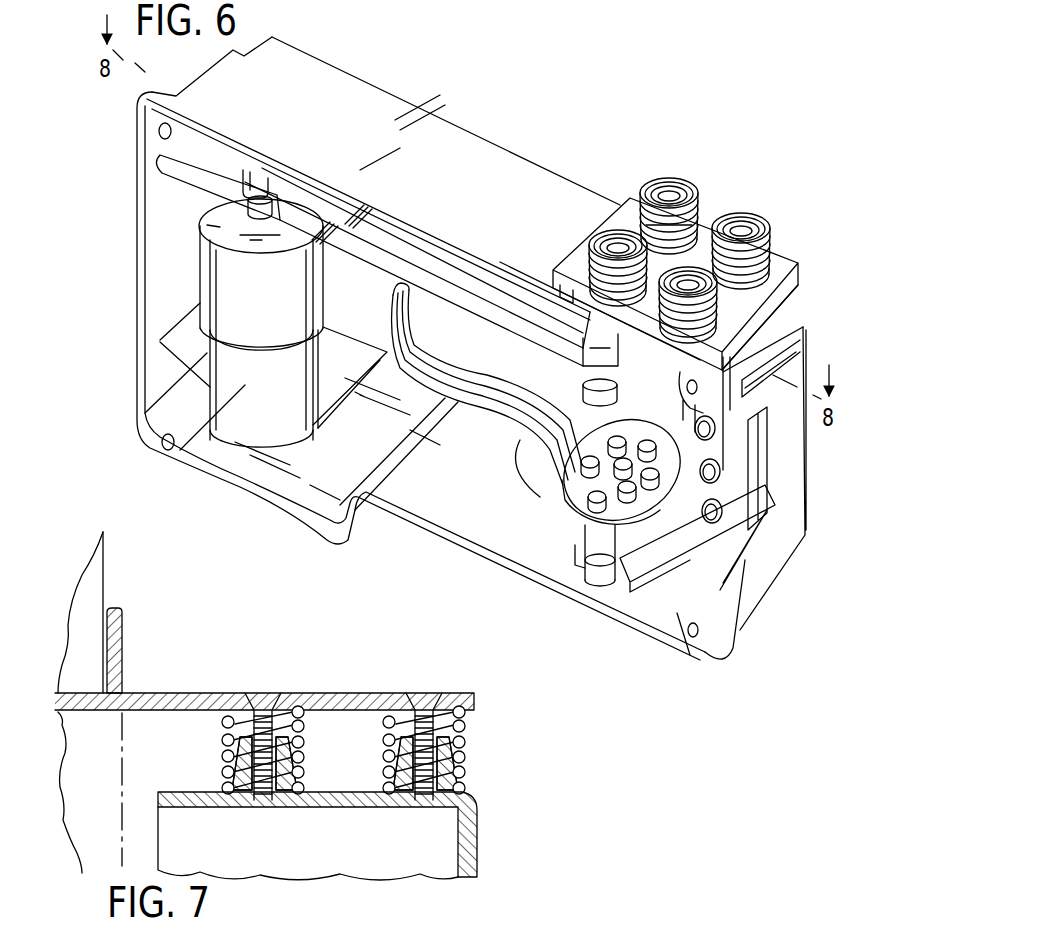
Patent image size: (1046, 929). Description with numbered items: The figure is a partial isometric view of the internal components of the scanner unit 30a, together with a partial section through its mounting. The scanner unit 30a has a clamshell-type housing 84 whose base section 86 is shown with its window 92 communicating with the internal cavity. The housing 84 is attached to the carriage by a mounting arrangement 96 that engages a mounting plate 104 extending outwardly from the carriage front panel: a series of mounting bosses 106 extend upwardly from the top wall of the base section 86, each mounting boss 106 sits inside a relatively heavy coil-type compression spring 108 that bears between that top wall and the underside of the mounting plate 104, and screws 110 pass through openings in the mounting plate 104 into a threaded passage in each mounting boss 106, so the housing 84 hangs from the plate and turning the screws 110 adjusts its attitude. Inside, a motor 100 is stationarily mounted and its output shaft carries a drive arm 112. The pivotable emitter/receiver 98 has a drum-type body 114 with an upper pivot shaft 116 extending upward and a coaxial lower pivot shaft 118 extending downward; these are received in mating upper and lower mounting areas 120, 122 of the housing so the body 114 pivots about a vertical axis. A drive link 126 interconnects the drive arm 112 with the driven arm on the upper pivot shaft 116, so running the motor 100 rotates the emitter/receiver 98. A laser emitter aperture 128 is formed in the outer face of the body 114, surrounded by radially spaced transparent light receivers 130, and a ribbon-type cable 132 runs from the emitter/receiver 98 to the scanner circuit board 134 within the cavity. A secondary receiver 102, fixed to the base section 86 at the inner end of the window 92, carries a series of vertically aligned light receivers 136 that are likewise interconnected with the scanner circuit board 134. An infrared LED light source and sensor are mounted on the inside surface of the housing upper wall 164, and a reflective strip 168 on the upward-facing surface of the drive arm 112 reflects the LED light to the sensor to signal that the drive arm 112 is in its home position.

In FIG. 6, the housing 84 is at (513, 108).
In FIG. 6, the base section 86 is at (815, 443).
In FIG. 7, the base section 86 is at (317, 836).
In FIG. 6, the window 92 is at (750, 557).
In FIG. 6, the mounting arrangement 96 is at (792, 206).
In FIG. 6, the emitter/receiver 98 is at (545, 527).
In FIG. 6, the motor 100 is at (182, 272).
In FIG. 6, the secondary receiver 102 is at (724, 531).
In FIG. 7, the mounting plate 104 is at (467, 692).
In FIG. 6, the mounting boss 106 is at (667, 203).
In FIG. 7, the mounting boss 106 is at (345, 763).
In FIG. 6, the compression spring 108 is at (697, 193).
In FIG. 7, the compression spring 108 is at (220, 720).
In FIG. 7, the screw 110 is at (273, 713).
In FIG. 6, the drive arm 112 is at (200, 180).
In FIG. 6, the drum-type body 114 is at (566, 529).
In FIG. 6, the upper pivot shaft 116 is at (580, 382).
In FIG. 6, the lower pivot shaft 118 is at (597, 550).
In FIG. 6, the upper mounting area 120 is at (780, 327).
In FIG. 6, the lower mounting area 122 is at (647, 565).
In FIG. 6, the drive link 126 is at (405, 255).
In FIG. 6, the laser emitter aperture 128 is at (543, 427).
In FIG. 6, the light receivers 130 is at (597, 510).
In FIG. 6, the ribbon-type cable 132 is at (480, 398).
In FIG. 6, the scanner circuit board 134 is at (492, 288).
In FIG. 6, the light receivers 136 is at (713, 510).
In FIG. 6, the housing upper wall 164 is at (187, 153).
In FIG. 6, the reflective strip 168 is at (262, 163).
In FIG. 6, the scanner unit 30a is at (772, 158).